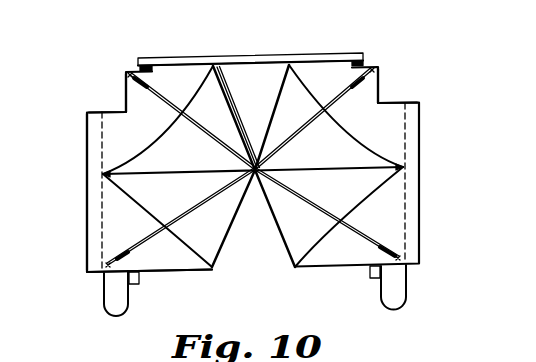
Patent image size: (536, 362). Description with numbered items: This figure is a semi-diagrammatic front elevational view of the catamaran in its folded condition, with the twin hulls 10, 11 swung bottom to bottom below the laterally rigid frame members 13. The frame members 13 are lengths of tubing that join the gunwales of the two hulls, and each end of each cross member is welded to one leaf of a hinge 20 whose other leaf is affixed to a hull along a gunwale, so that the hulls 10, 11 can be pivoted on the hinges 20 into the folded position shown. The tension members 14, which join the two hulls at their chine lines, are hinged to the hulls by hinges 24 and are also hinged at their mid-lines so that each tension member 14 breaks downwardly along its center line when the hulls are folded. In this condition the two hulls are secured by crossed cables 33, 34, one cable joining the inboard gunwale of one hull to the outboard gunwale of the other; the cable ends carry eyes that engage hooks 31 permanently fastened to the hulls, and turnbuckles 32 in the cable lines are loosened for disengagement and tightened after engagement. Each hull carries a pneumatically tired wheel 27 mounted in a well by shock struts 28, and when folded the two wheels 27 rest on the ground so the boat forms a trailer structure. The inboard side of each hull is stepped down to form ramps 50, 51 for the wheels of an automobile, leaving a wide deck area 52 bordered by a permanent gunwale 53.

The hull 10 is at (127, 210).
The hull 11 is at (383, 203).
The laterally rigid frame members 13 is at (266, 57).
The tension members 14 is at (231, 101).
The hinge 20 is at (363, 59).
The hinges 24 is at (210, 73).
The pneumatically tired wheel 27 is at (110, 298).
The shock struts 28 is at (370, 273).
The hooks 31 is at (129, 78).
The turnbuckles 32 is at (118, 253).
The cable 33 is at (219, 138).
The cable 34 is at (211, 191).
The ramp 50 is at (125, 99).
The ramp 51 is at (379, 88).
The deck area 52 is at (101, 163).
The permanent gunwale 53 is at (97, 270).